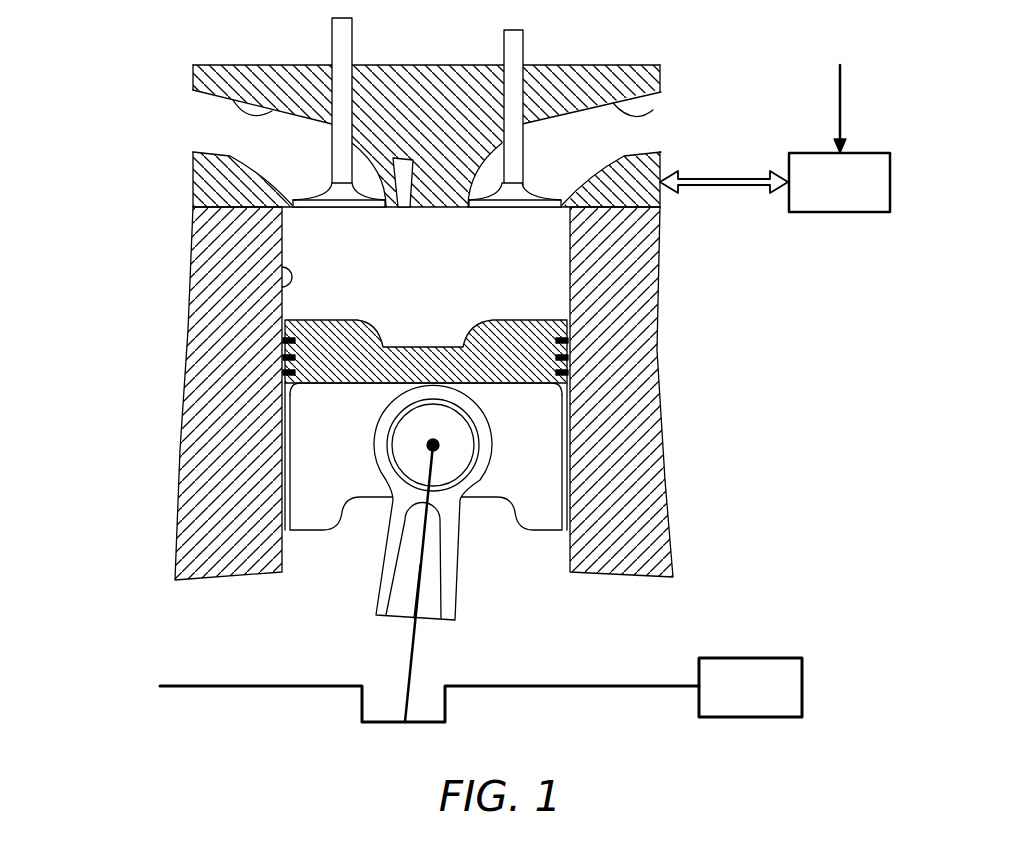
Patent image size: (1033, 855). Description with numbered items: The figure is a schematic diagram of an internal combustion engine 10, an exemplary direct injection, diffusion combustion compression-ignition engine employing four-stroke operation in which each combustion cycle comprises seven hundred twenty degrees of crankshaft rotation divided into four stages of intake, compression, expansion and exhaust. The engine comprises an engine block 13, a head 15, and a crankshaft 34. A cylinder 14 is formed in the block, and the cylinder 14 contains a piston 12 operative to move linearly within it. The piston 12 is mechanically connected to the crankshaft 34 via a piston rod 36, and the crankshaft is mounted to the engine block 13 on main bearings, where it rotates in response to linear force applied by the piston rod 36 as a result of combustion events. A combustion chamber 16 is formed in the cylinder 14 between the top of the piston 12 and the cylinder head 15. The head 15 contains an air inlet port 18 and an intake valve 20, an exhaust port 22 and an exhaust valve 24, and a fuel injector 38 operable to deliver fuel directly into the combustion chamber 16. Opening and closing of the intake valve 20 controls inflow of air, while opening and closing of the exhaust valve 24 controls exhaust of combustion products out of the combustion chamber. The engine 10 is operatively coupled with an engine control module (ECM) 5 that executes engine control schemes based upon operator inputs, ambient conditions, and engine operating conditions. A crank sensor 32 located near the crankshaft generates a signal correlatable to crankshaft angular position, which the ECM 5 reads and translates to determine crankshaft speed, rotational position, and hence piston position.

The internal combustion engine 10 is at (388, 386).
The engine control module (ECM) 5 is at (878, 163).
The piston 12 is at (328, 320).
The engine block 13 is at (217, 373).
The cylinder 14 is at (282, 268).
The head 15 is at (402, 132).
The combustion chamber 16 is at (540, 300).
The air inlet port 18 is at (236, 101).
The intake valve 20 is at (337, 207).
The exhaust port 22 is at (653, 112).
The exhaust valve 24 is at (517, 203).
The crank sensor 32 is at (770, 663).
The crankshaft 34 is at (362, 707).
The piston rod 36 is at (388, 572).
The fuel injector 38 is at (393, 210).